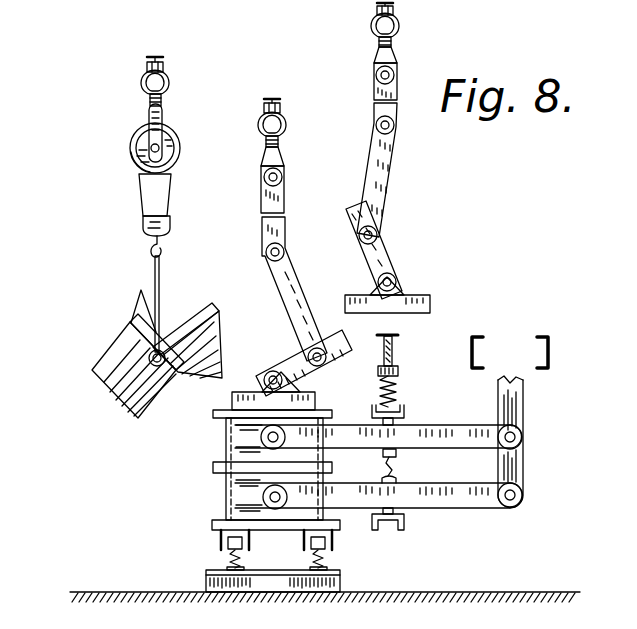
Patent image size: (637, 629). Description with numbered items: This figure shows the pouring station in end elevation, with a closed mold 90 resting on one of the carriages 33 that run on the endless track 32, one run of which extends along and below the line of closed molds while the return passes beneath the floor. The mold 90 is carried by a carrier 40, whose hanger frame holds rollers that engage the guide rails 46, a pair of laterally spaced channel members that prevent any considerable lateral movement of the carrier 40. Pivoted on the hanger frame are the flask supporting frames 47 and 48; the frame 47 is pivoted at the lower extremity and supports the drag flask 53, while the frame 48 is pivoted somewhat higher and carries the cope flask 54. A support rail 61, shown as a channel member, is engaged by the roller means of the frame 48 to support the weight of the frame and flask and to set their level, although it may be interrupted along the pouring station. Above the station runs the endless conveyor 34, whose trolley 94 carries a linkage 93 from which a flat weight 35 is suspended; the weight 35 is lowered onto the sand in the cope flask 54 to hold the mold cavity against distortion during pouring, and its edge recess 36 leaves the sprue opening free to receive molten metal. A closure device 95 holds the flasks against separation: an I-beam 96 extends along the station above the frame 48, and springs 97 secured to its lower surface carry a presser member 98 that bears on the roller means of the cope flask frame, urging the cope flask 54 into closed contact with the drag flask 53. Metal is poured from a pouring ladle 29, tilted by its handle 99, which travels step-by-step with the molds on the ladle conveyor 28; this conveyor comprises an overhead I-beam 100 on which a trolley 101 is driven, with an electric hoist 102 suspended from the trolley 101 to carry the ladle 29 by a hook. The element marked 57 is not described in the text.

The ladle conveyor 28 is at (155, 194).
The I-beam 100 is at (157, 57).
The trolley 101 is at (161, 112).
The electric hoist 102 is at (168, 142).
The pouring ladle 29 is at (138, 345).
The handle 99 is at (197, 303).
The endless conveyor 34 is at (332, 206).
The trolley 94 is at (258, 131).
The linkage 93 is at (309, 292).
The edge recess 36 is at (250, 392).
The flat weight 35 is at (311, 393).
The complete mold 90 is at (245, 474).
The cope flask 54 is at (242, 438).
The drag flask 53 is at (240, 497).
The carriage 33 is at (212, 528).
The endless track 32 is at (322, 562).
The flask supporting frame 48 is at (436, 424).
The flask supporting frame 47 is at (443, 511).
The carrier 40 is at (528, 401).
The guide rail 46 is at (536, 353).
The I-beam 96 is at (395, 353).
The closure device 95 is at (406, 383).
The spring 97 is at (399, 401).
The presser member 98 is at (373, 410).
The connecting link 57 is at (384, 456).
The support rail 61 is at (405, 528).